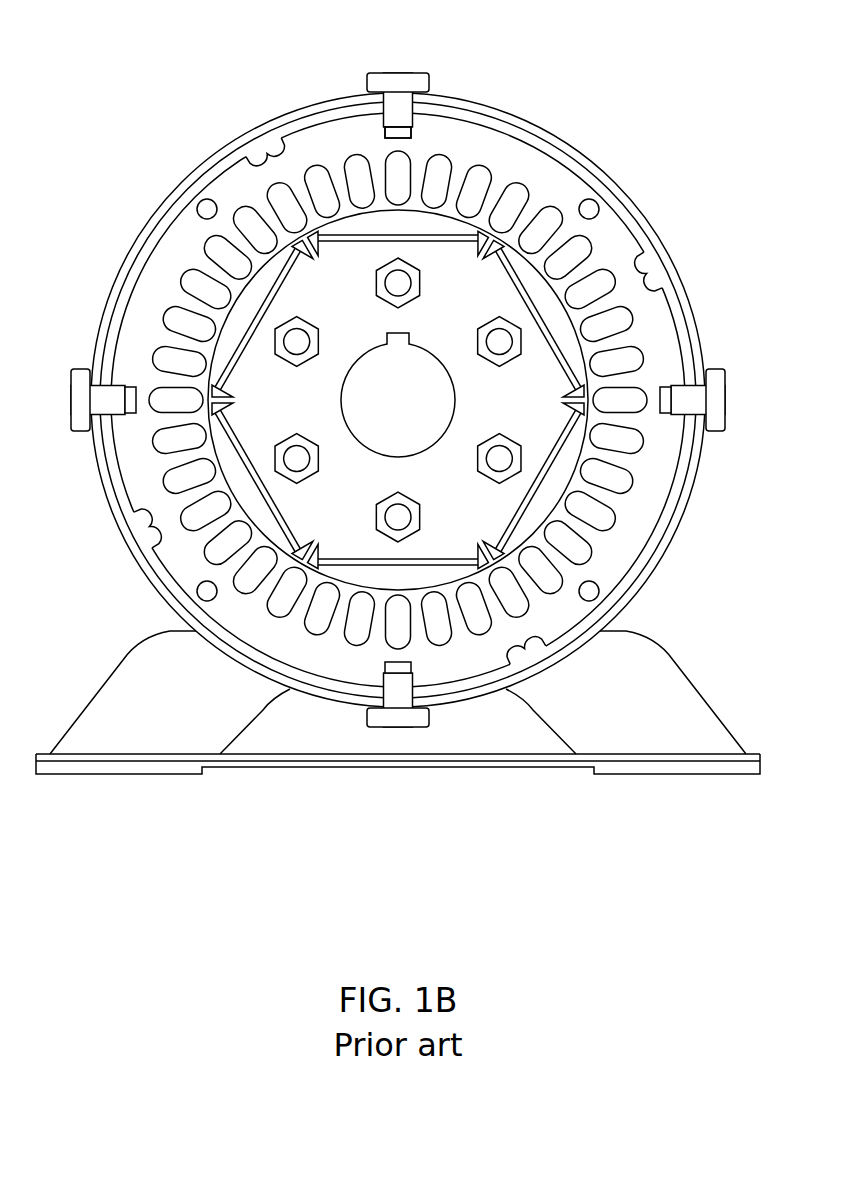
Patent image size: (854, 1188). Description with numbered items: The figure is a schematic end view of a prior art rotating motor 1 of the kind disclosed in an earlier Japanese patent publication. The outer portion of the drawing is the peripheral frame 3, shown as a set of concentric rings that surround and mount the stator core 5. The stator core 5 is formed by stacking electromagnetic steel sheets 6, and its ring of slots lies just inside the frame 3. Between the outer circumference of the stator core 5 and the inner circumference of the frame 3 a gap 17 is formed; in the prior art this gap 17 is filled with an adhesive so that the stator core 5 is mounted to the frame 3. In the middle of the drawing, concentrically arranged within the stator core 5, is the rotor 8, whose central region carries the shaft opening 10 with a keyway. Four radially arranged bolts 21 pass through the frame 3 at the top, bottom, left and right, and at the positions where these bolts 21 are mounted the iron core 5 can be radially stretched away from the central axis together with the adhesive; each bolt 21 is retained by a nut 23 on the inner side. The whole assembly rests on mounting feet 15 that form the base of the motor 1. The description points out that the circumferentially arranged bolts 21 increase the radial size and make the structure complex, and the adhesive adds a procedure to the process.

The motor 1 is at (568, 123).
The frame 3 is at (398, 379).
The stator core 5 is at (420, 401).
The electromagnetic steel sheets 6 is at (445, 400).
The rotor 8 is at (340, 400).
The shaft bore 10 is at (373, 395).
The mounting feet 15 is at (115, 685).
The gap 17 is at (398, 400).
The bolts 21 is at (398, 81).
The nut 23 is at (343, 104).